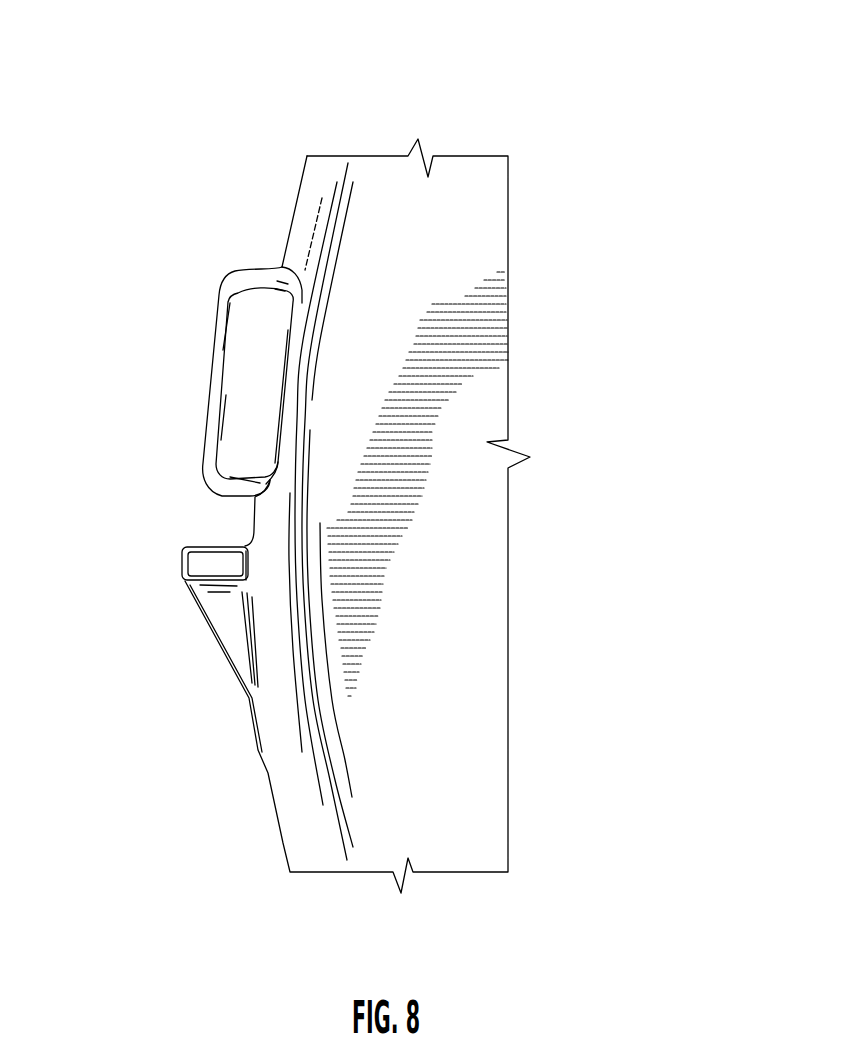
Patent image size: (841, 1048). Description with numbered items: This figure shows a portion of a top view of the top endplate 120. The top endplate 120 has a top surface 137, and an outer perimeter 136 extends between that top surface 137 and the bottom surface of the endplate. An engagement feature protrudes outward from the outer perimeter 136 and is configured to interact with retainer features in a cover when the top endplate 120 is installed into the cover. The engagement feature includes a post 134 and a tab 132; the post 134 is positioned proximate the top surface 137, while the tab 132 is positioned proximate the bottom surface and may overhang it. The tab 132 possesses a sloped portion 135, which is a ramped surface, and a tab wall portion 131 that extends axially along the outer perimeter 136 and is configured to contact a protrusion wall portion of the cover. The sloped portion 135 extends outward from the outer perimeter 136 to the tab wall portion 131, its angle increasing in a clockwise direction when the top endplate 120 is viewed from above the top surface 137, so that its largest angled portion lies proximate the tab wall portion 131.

The top endplate 120 is at (613, 128).
The tab wall portion 131 is at (213, 547).
The tab 132 is at (183, 570).
The post 134 is at (253, 282).
The sloped portion 135 is at (212, 632).
The outer perimeter 136 is at (295, 200).
The top surface 137 is at (455, 185).